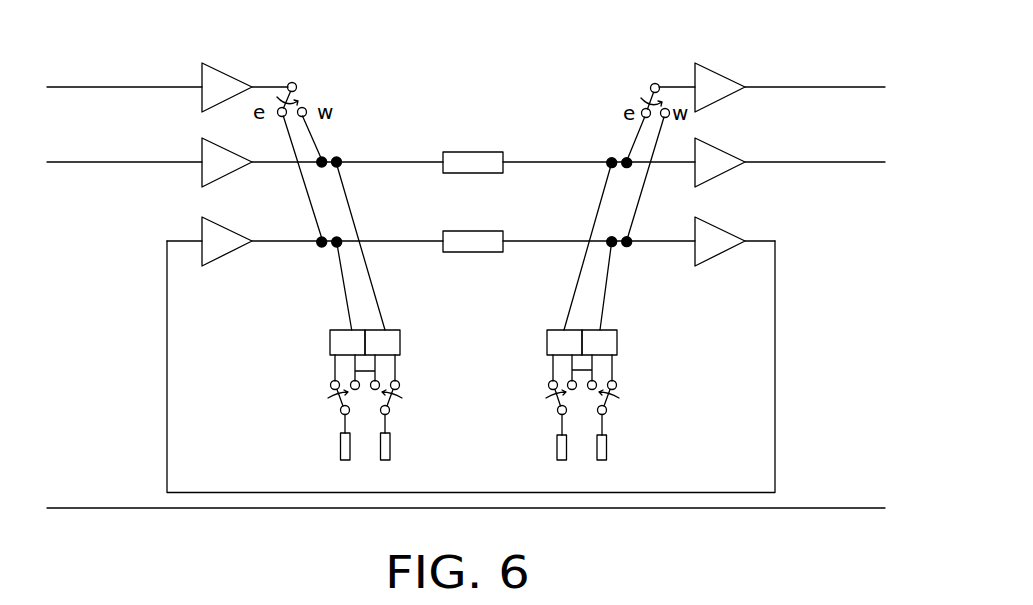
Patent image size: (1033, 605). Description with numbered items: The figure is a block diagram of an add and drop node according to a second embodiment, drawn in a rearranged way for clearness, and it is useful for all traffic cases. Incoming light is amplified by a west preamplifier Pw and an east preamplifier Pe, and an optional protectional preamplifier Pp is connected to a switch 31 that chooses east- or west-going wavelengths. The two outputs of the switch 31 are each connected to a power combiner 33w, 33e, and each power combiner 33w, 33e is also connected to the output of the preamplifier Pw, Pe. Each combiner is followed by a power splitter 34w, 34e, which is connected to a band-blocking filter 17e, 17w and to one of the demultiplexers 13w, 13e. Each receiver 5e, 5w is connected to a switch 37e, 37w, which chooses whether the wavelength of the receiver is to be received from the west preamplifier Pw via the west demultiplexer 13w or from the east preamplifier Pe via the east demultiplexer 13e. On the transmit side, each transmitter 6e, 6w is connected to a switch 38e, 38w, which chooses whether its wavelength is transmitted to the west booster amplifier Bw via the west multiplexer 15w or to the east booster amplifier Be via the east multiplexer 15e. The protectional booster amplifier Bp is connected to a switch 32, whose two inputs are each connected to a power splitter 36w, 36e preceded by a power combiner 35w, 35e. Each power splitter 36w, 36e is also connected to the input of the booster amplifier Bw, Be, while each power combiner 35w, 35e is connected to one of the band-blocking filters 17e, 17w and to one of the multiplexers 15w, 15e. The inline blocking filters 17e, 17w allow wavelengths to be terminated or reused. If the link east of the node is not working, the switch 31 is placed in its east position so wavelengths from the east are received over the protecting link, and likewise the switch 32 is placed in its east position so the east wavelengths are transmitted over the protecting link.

The protectional preamplifier Pp is at (220, 67).
The west preamplifier Pw is at (220, 143).
The east preamplifier Pe is at (221, 222).
The protectional booster amplifier Bp is at (697, 63).
The east booster amplifier Be is at (697, 138).
The west booster amplifier Bw is at (697, 217).
The switch 31 is at (297, 87).
The switch 32 is at (651, 89).
The power combiner 33e is at (320, 245).
The power combiner 33w is at (338, 161).
The power splitter 34e is at (337, 240).
The power splitter 34w is at (341, 162).
The power combiner 35e is at (608, 163).
The power combiner 35w is at (616, 243).
The power splitter 36e is at (624, 162).
The power splitter 36w is at (628, 243).
The band-blocking filter 17e is at (493, 152).
The band-blocking filter 17w is at (474, 252).
The east demultiplexer 13e is at (330, 341).
The west demultiplexer 13w is at (400, 340).
The east multiplexer 15e is at (547, 347).
The west multiplexer 15w is at (617, 343).
The switch 37e is at (331, 383).
The switch 37w is at (399, 383).
The switch 38e is at (550, 384).
The switch 38w is at (616, 383).
The receiver 5e is at (340, 436).
The receiver 5w is at (390, 456).
The transmitter 6e is at (562, 461).
The transmitter 6w is at (606, 438).